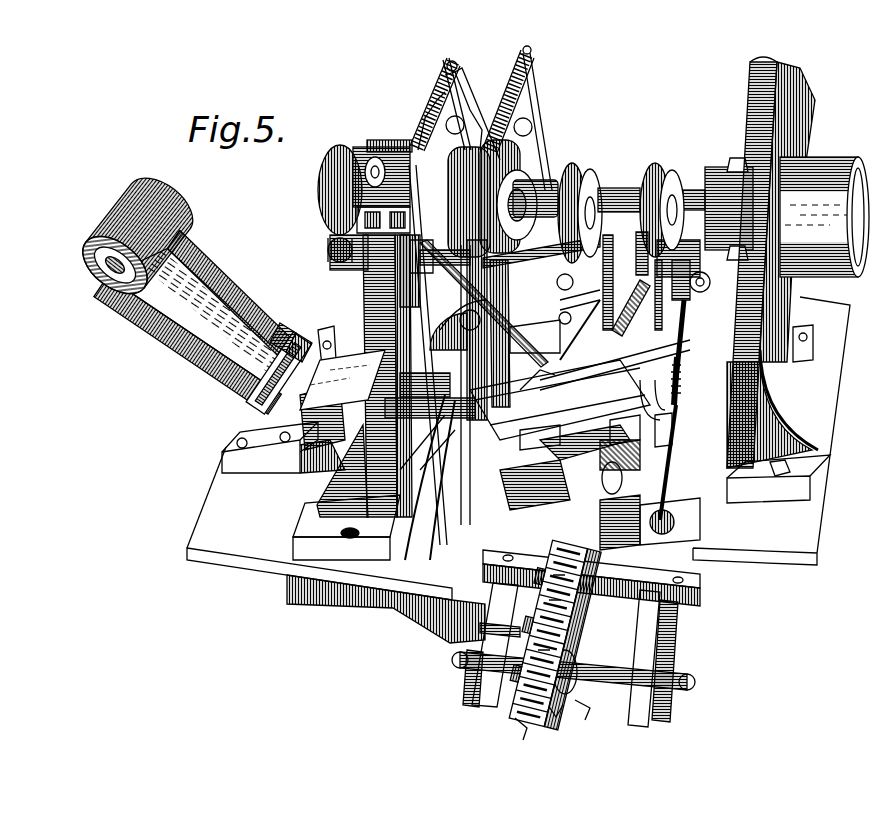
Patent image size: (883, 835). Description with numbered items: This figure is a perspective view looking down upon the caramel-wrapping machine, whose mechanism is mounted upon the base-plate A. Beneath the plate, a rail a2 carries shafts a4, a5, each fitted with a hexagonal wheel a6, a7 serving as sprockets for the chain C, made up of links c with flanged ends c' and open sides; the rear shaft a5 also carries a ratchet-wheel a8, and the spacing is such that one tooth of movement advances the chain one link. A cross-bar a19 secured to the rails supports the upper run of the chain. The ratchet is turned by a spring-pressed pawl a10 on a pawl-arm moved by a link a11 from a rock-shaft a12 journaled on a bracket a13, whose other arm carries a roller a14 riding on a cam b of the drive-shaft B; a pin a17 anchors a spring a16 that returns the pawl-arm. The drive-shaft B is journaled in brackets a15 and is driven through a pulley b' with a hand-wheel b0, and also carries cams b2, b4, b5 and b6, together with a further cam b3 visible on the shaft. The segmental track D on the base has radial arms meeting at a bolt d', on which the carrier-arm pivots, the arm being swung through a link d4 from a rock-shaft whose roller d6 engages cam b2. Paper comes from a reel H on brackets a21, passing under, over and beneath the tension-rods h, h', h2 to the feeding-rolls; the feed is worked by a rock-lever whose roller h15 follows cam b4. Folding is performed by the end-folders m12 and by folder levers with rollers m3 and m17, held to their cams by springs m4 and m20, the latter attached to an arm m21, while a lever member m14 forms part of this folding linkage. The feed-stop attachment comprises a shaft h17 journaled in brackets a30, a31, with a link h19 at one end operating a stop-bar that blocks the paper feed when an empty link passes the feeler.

The reel H is at (76, 259).
The brackets a21 is at (218, 268).
The tension-rod h is at (274, 310).
The tension-rod h' is at (293, 320).
The tension-rod h2 is at (324, 330).
The roller h15 is at (328, 250).
The shaft h17 is at (307, 473).
The link h19 is at (423, 633).
The base-plate A is at (232, 480).
The spring a16 is at (307, 530).
The brackets a15 is at (810, 433).
The cam b4 is at (347, 150).
The cam b6 is at (327, 200).
The arm m21 is at (403, 118).
The spring m20 is at (437, 100).
The toothed segment m14 is at (447, 87).
The rollers m17 is at (483, 100).
The spring m4 is at (527, 67).
The roller m3 is at (533, 90).
The end-folders m12 is at (487, 300).
The gear b3 is at (527, 157).
The cam b5 is at (533, 167).
The cam b2 is at (577, 167).
The drive-shaft B is at (620, 197).
The cam b is at (662, 198).
The hand-wheel b0 is at (793, 73).
The pulley b' is at (824, 198).
The bracket a30 is at (342, 380).
The segmental track D is at (430, 477).
The link d4 is at (427, 454).
The bracket a31 is at (560, 400).
The rail a2 is at (540, 430).
The bolt d' is at (578, 332).
The link d is at (536, 380).
The roller d6 is at (560, 326).
The bracket a13 is at (640, 320).
The rock-shaft a12 is at (702, 284).
The roller a14 is at (681, 305).
The spring-pressed pawl a10 is at (680, 338).
The link a11 is at (677, 437).
The ratchet-wheel a8 is at (660, 447).
The pin a17 is at (625, 430).
The hexagonal wheel a7 is at (612, 478).
The rear shaft a5 is at (680, 523).
The hexagonal wheel a6 is at (562, 275).
The cross-bar a19 is at (581, 638).
The shaft a4 is at (600, 683).
The chain C is at (520, 710).
The links c is at (551, 621).
The flanged ends c' is at (563, 725).